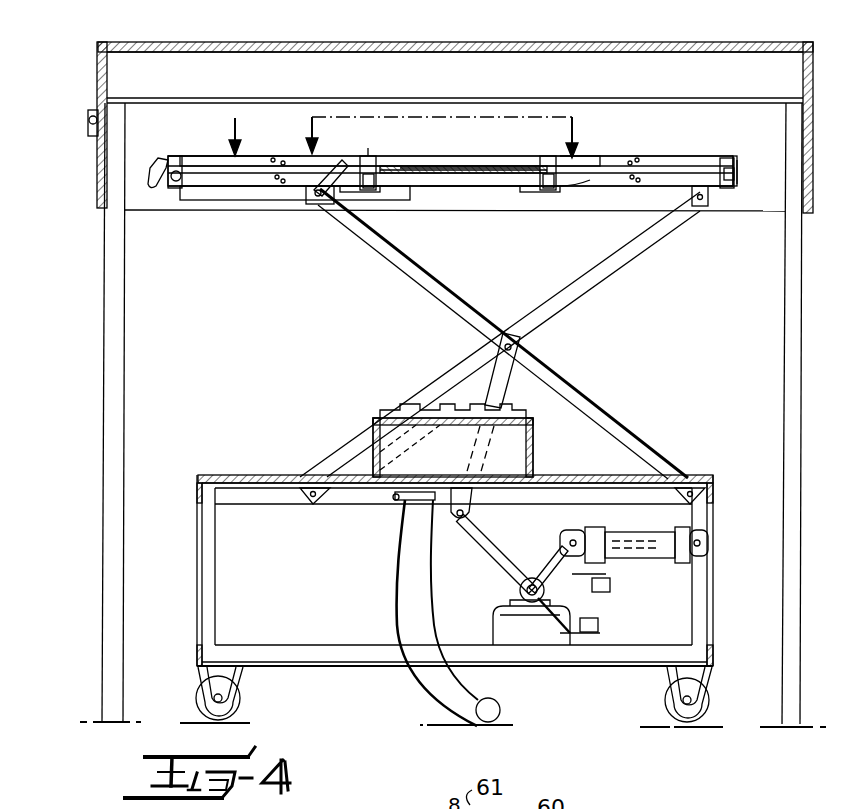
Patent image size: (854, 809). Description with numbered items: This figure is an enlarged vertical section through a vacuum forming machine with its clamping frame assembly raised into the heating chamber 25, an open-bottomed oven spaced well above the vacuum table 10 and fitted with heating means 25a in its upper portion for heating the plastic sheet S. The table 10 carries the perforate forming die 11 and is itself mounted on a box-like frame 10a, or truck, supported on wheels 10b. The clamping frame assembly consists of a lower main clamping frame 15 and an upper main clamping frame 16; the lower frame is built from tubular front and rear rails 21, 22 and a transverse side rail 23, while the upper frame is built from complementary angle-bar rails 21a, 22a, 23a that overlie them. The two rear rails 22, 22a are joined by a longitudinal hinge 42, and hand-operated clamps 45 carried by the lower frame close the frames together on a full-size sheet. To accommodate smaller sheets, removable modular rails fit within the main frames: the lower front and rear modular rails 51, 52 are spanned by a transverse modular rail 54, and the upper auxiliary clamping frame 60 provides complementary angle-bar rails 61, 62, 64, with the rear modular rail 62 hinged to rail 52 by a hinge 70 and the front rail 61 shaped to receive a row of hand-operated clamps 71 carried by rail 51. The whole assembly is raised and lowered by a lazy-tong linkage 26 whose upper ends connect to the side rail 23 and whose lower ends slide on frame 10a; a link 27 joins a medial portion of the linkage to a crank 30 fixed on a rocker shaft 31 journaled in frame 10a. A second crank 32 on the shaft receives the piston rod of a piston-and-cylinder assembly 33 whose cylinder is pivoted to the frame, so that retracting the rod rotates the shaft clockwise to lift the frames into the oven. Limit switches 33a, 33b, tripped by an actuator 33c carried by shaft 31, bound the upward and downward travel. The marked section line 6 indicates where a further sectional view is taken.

The vacuum table 10 is at (240, 476).
The box-like frame 10a is at (190, 610).
The wheels 10b is at (243, 698).
The forming die 11 is at (393, 418).
The lower main clamping frame 15 is at (231, 200).
The upper main clamping frame 16 is at (236, 130).
The front main frame rail 21 is at (176, 190).
The upper front rail 21a is at (190, 158).
The rear main frame rail 22 is at (738, 190).
The upper rear rail 22a is at (737, 158).
The side rail 23 is at (603, 188).
The upper side rail 23a is at (680, 144).
The heating chamber 25 is at (92, 70).
The heating means 25a is at (478, 86).
The lazy-tong linkage 26 is at (430, 286).
The link 27 is at (505, 390).
The crank 30 is at (496, 556).
The rocker shaft 31 is at (520, 590).
The crank 32 is at (551, 560).
The piston-and-cylinder assembly 33 is at (640, 528).
The limit switch 33a is at (598, 630).
The limit switch 33b is at (610, 586).
The actuator 33c is at (512, 622).
The hinge 42 is at (738, 174).
The hand-operated clamps 45 is at (142, 172).
The lower front modular rail 51 is at (360, 190).
The lower rear modular rail 52 is at (540, 190).
The left-hand transverse lower modular rail 54 is at (460, 190).
The upper auxiliary clamping frame 60 is at (485, 150).
The upper front modular rail 61 is at (370, 168).
The upper rear modular rail 62 is at (546, 166).
The upper transverse modular rail 64 is at (490, 166).
The hinge 70 is at (562, 168).
The hand-operated clamps 71 is at (300, 184).
The section line 6- 6 is at (416, 136).
The plastic sheet S is at (440, 172).